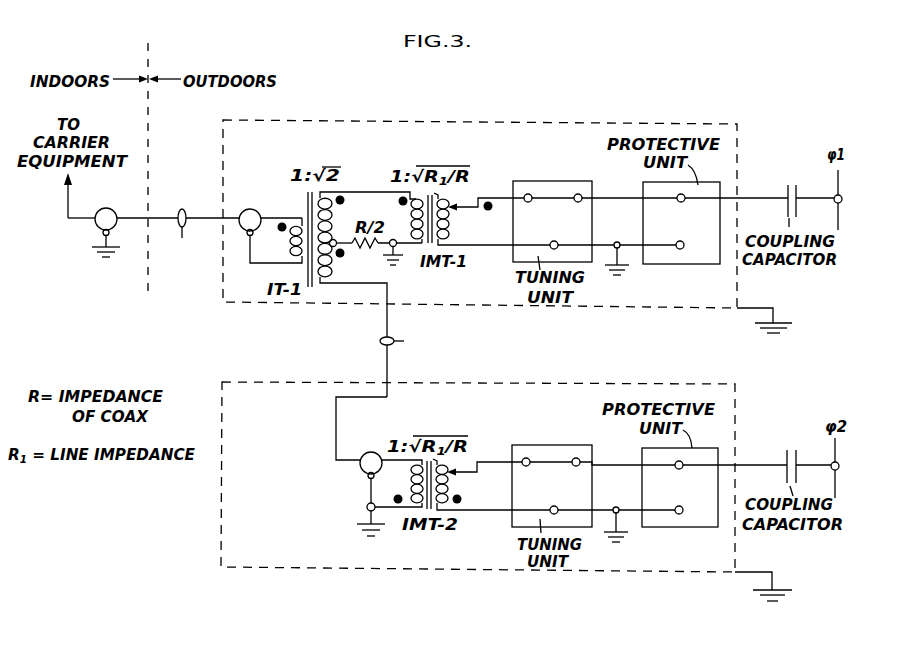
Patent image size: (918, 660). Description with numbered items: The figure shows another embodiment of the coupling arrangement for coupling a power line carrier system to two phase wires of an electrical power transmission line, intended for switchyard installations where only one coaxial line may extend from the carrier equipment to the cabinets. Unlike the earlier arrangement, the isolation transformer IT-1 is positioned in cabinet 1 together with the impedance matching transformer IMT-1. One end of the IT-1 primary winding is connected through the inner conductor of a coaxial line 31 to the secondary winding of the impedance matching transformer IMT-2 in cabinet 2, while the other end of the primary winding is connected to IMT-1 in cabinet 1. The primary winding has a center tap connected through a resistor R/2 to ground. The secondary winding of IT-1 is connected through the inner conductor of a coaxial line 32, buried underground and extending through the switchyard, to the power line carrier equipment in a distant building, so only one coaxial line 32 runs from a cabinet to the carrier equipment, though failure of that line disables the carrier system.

The coaxial line 31 is at (387, 358).
The coaxial line 32 is at (202, 215).
The cabinet 1 is at (480, 214).
The cabinet 2 is at (478, 477).